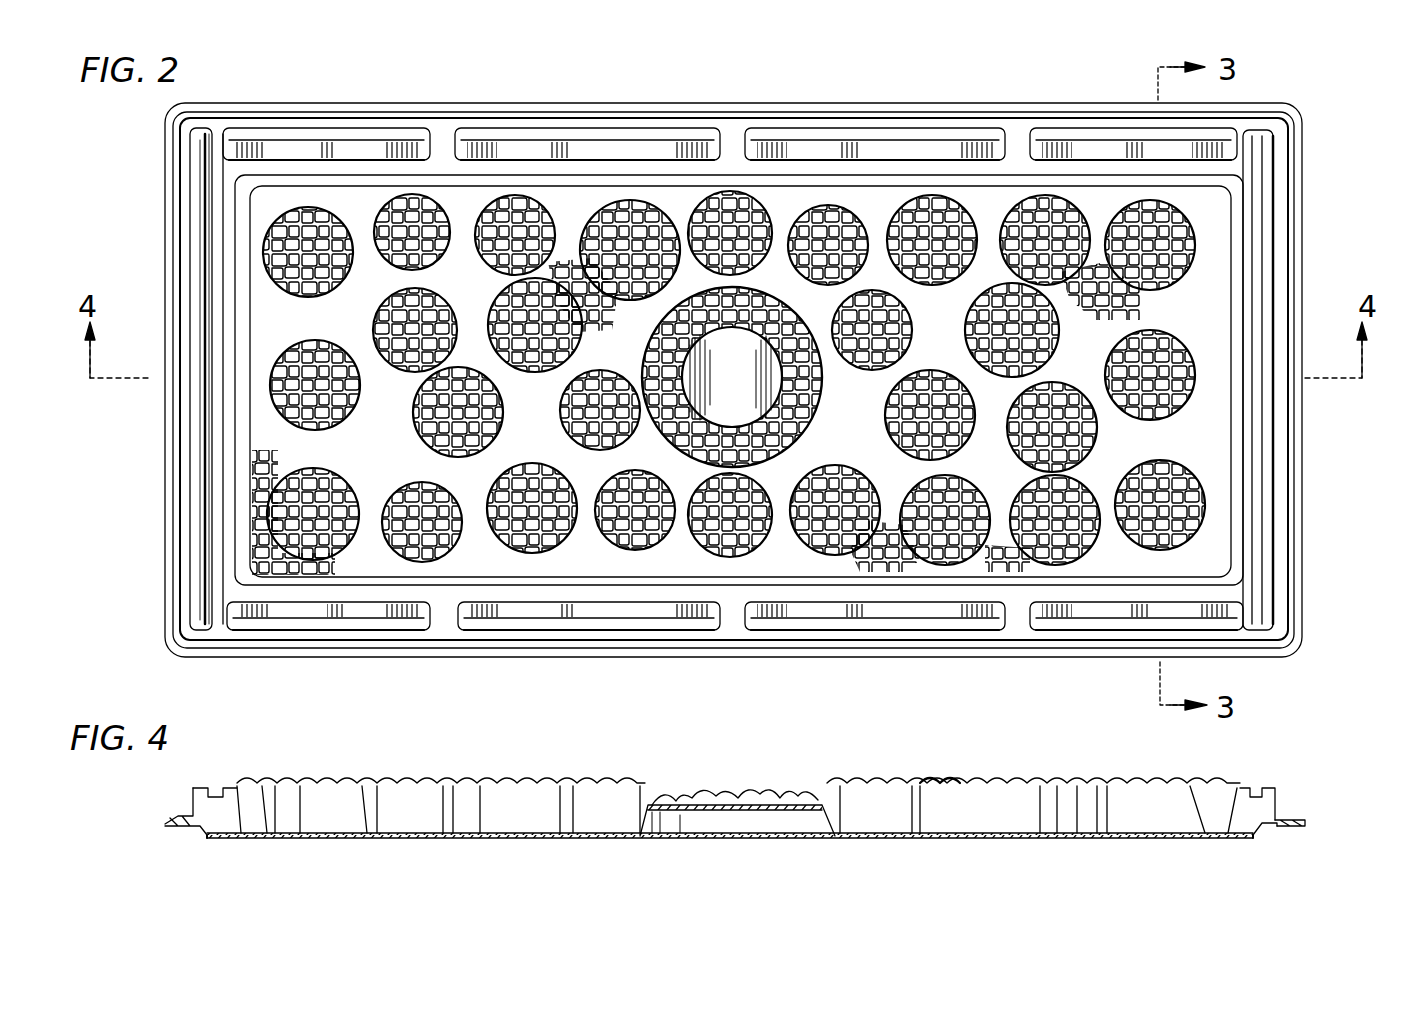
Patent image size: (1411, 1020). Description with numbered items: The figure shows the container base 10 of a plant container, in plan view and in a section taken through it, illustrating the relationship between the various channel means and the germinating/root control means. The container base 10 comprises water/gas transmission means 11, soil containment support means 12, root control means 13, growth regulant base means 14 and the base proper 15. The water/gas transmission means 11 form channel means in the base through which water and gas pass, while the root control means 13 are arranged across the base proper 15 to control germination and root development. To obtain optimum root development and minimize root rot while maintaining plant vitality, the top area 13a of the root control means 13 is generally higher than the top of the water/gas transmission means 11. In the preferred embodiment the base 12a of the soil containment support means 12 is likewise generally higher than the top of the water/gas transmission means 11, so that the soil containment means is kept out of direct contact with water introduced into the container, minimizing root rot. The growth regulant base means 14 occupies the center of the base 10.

In FIG. 2, the container base 10 is at (784, 370).
In FIG. 4, the container base 10 is at (779, 762).
In FIG. 2, the water/gas transmission means 11 is at (1283, 583).
In FIG. 4, the water/gas transmission means 11 is at (1283, 806).
In FIG. 2, the soil containment support means 12 is at (1273, 466).
In FIG. 4, the soil containment support means 12 is at (1243, 790).
In FIG. 2, the base of soil containment support means 12a is at (1258, 525).
In FIG. 4, the base of soil containment support means 12a is at (1257, 790).
In FIG. 2, the root control means 13 is at (734, 378).
In FIG. 4, the root control means 13 is at (405, 775).
In FIG. 2, the top area of root control means 13a is at (912, 340).
In FIG. 4, the top area of root control means 13a is at (983, 770).
In FIG. 2, the growth regulant base means 14 is at (744, 377).
In FIG. 4, the growth regulant base means 14 is at (735, 805).
In FIG. 2, the base proper 15 is at (559, 196).
In FIG. 4, the base proper 15 is at (882, 840).